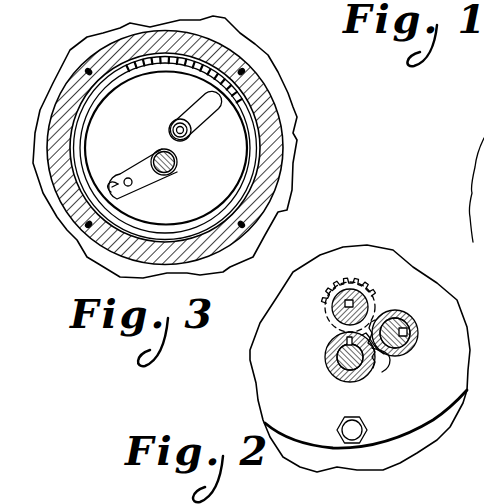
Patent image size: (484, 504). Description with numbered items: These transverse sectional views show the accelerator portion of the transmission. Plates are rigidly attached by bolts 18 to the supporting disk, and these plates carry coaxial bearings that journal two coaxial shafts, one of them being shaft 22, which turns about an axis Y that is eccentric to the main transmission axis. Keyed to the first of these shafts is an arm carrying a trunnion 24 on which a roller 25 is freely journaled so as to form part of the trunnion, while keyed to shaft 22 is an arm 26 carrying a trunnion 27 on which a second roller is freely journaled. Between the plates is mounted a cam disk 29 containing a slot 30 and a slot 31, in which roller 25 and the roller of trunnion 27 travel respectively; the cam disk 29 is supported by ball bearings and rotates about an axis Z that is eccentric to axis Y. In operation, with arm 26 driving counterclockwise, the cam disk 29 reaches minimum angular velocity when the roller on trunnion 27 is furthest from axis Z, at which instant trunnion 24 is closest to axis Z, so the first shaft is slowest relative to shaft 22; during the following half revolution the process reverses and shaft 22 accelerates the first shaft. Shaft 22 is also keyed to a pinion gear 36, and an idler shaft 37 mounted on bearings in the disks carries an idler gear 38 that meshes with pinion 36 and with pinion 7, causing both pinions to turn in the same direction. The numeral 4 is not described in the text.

In FIG. 2, the gear 4 is at (332, 369).
In FIG. 2, the pinion 7 is at (382, 372).
In FIG. 3, the bolts 18 is at (245, 69).
In FIG. 2, the bolts 18 is at (357, 428).
In FIG. 3, the shaft 22 is at (177, 154).
In FIG. 2, the shaft 22 is at (333, 313).
In FIG. 3, the trunnion 24 is at (175, 126).
In FIG. 3, the roller 25 is at (180, 120).
In FIG. 3, the arm 26 is at (162, 182).
In FIG. 3, the trunnion 27 is at (133, 186).
In FIG. 3, the cam disk 29 is at (128, 110).
In FIG. 3, the slot 30 is at (203, 113).
In FIG. 3, the slot 31 is at (116, 186).
In FIG. 2, the pinion gear 36 is at (365, 280).
In FIG. 2, the idler shaft 37 is at (413, 312).
In FIG. 2, the idler gear 38 is at (397, 356).
In FIG. 3, the axis Y is at (176, 167).
In FIG. 3, the axis Z is at (162, 144).